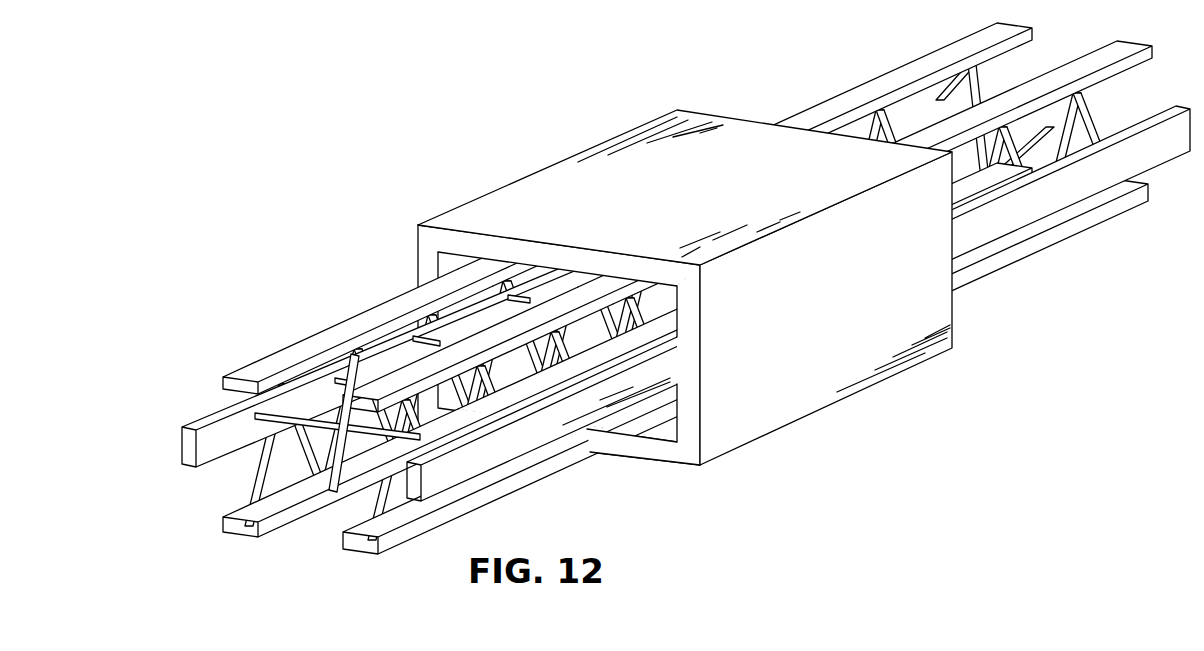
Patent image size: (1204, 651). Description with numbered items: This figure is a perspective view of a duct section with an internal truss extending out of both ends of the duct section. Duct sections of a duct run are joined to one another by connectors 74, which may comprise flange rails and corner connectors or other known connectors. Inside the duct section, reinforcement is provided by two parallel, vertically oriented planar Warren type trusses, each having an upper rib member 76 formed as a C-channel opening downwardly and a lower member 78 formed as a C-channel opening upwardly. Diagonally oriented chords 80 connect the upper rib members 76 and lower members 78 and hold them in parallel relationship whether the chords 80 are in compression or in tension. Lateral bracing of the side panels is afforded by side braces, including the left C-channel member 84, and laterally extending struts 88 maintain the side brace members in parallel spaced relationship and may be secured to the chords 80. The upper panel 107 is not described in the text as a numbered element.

The connector 74 is at (662, 287).
The upper rib member 76 is at (395, 310).
The lower member 78 is at (558, 463).
The diagonally oriented chord 80 is at (305, 393).
The left C-channel member 84 is at (478, 458).
The laterally extending strut 88 is at (331, 493).
The top panel 107 is at (527, 197).